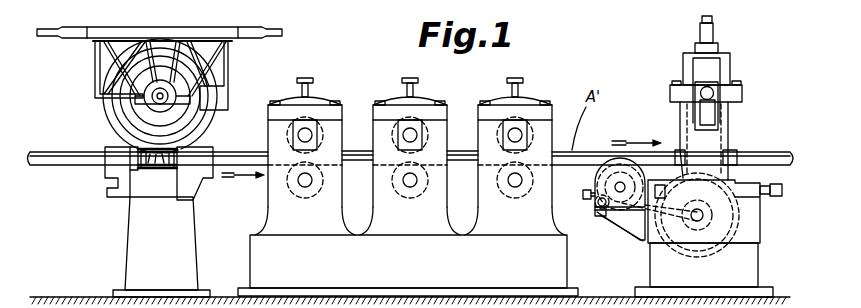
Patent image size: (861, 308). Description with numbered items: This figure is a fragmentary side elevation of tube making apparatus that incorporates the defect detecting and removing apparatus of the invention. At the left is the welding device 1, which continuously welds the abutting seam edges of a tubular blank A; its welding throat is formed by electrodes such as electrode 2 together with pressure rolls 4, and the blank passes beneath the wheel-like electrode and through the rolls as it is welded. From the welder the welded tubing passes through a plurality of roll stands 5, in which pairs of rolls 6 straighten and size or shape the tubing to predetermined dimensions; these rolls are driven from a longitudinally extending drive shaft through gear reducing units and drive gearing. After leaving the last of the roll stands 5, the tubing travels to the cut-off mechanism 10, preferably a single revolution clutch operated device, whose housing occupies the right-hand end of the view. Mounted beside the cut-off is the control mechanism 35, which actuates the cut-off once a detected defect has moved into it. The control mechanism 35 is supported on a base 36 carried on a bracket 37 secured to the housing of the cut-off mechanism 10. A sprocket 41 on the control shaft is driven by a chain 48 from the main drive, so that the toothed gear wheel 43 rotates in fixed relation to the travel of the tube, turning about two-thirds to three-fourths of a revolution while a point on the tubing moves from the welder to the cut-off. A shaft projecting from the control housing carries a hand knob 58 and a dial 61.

The welding device 1 is at (230, 58).
The electrode 2 is at (195, 117).
The pressure rolls 4 is at (160, 168).
The roll stands 5 is at (323, 122).
The pairs of rolls 6 is at (322, 138).
The cut-off mechanism 10 is at (735, 100).
The control mechanism 35 is at (606, 160).
The base 36 is at (628, 214).
The bracket 37 is at (636, 232).
The sprocket 41 is at (597, 179).
The gear wheel 43 is at (597, 157).
The chain 48 is at (660, 240).
The hand knob 58 is at (589, 199).
The dial 61 is at (608, 218).
The tubular blank A is at (35, 153).